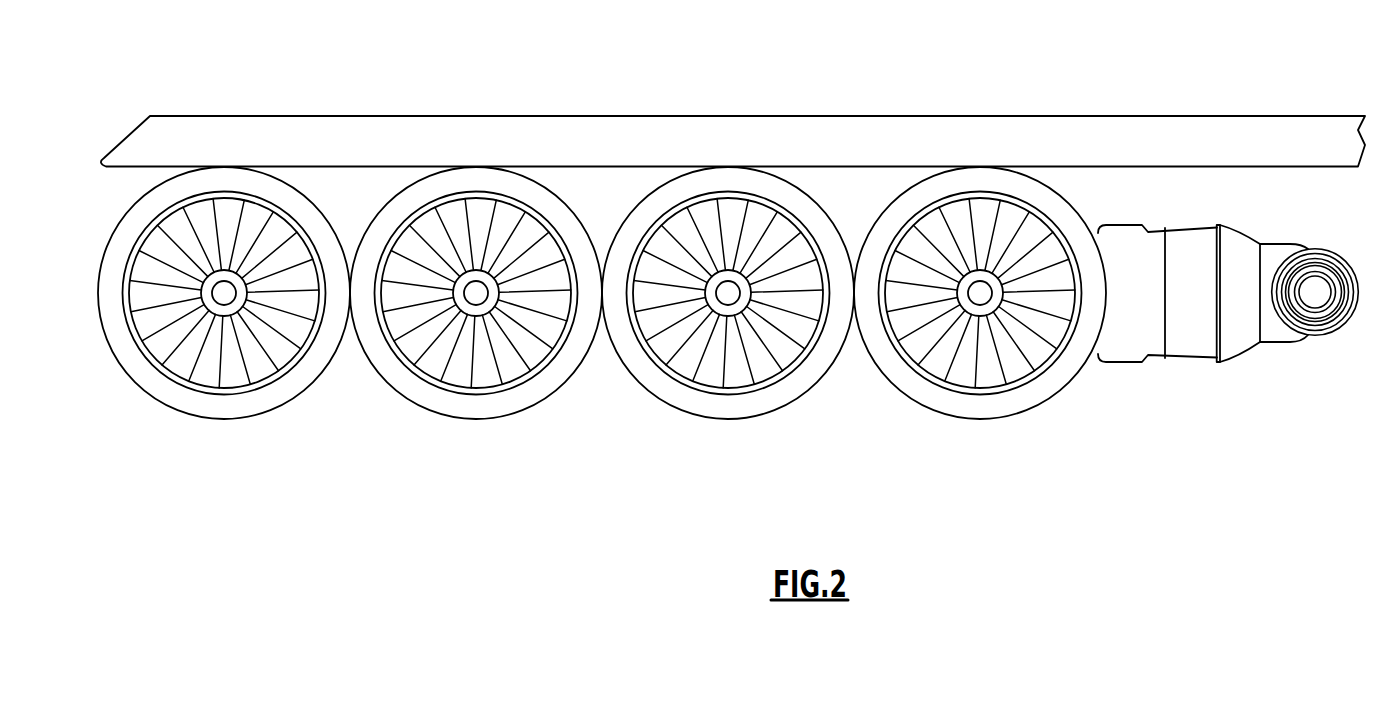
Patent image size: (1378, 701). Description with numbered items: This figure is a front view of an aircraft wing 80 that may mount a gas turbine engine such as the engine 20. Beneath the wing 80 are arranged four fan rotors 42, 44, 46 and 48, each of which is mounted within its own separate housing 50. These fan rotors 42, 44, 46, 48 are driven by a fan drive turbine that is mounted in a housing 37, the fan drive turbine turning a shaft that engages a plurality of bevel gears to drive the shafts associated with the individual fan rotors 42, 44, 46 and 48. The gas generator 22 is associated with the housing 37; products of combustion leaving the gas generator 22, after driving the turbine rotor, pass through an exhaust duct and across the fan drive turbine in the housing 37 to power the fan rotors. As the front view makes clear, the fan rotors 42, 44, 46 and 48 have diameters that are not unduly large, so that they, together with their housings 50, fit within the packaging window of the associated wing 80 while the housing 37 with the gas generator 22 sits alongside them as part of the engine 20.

The aircraft wing 80 is at (987, 137).
The housings 50 is at (202, 403).
The fan rotor 48 is at (178, 225).
The fan rotor 46 is at (430, 225).
The fan rotor 44 is at (682, 225).
The fan rotor 42 is at (934, 225).
The housing 37 is at (1172, 358).
The gas generator 22 is at (1318, 297).
The engine 20 is at (1277, 213).